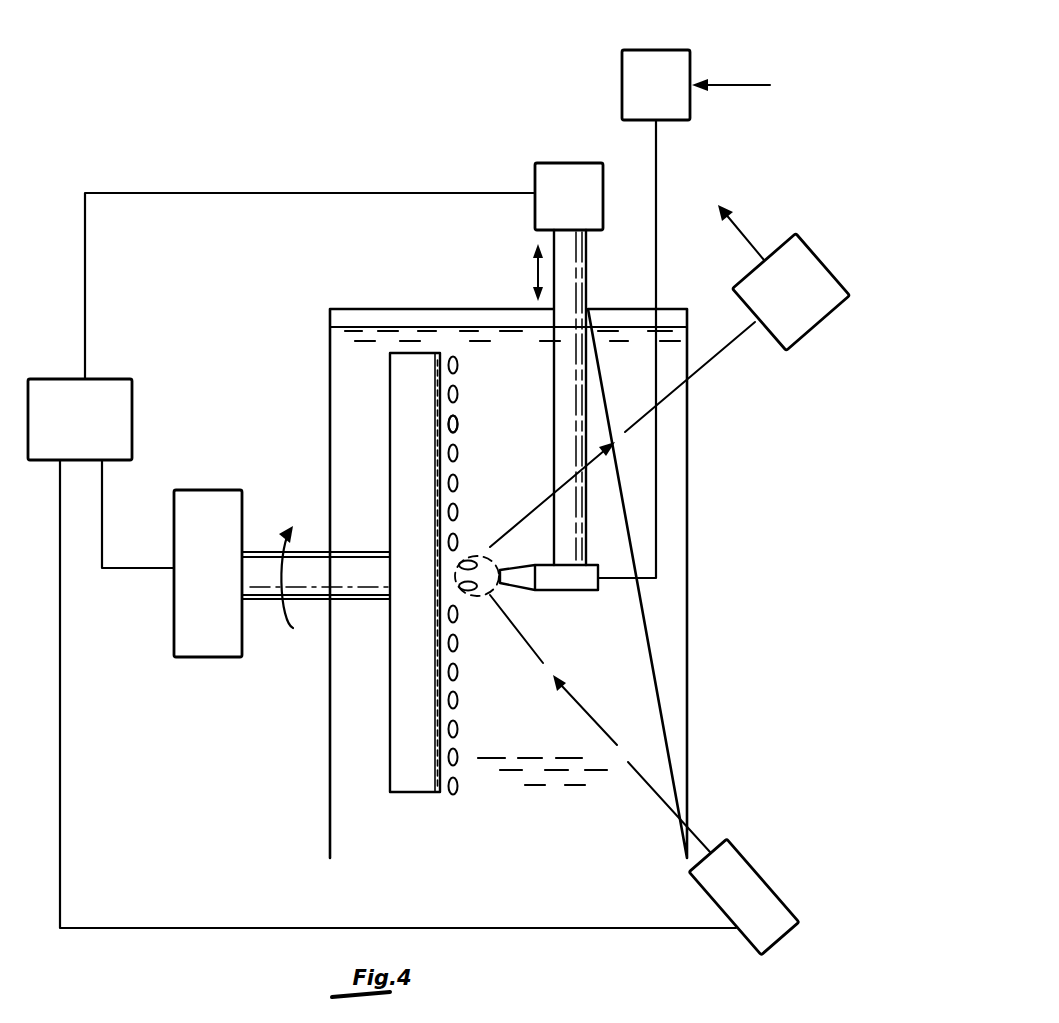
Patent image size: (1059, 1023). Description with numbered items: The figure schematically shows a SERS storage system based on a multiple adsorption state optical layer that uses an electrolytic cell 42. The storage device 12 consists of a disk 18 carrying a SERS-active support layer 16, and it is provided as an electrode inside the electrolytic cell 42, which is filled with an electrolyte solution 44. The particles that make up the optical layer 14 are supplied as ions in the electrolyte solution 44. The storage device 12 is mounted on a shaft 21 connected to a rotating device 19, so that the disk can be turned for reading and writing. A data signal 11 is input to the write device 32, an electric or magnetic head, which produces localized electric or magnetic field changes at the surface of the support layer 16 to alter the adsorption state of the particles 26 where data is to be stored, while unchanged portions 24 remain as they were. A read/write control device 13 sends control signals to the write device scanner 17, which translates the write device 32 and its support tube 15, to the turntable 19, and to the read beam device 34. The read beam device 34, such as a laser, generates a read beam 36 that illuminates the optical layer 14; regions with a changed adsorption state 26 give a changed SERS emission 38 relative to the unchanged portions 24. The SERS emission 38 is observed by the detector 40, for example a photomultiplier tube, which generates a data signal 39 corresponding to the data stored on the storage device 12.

The data signal 11 is at (720, 84).
The storage device 12 is at (386, 433).
The read/write control device 13 is at (116, 378).
The optical layer 14 is at (462, 390).
The nozzle support tube 15 is at (584, 250).
The SERS-active support layer 16 is at (438, 792).
The write device scanner 17 is at (565, 163).
The disk 18 is at (402, 515).
The rotating device 19 is at (207, 490).
The shaft 21 is at (310, 600).
The unchanged portions 24 is at (458, 418).
The particles with changed adsorption state 26 is at (461, 556).
The write device 32 is at (576, 582).
The read beam device 34 is at (732, 840).
The read beam 36 is at (637, 764).
The SERS emission 38 is at (708, 363).
The data signal 39 is at (745, 228).
The detector 40 is at (740, 282).
The electrolytic cell 42 is at (330, 342).
The electrolyte solution 44 is at (357, 389).